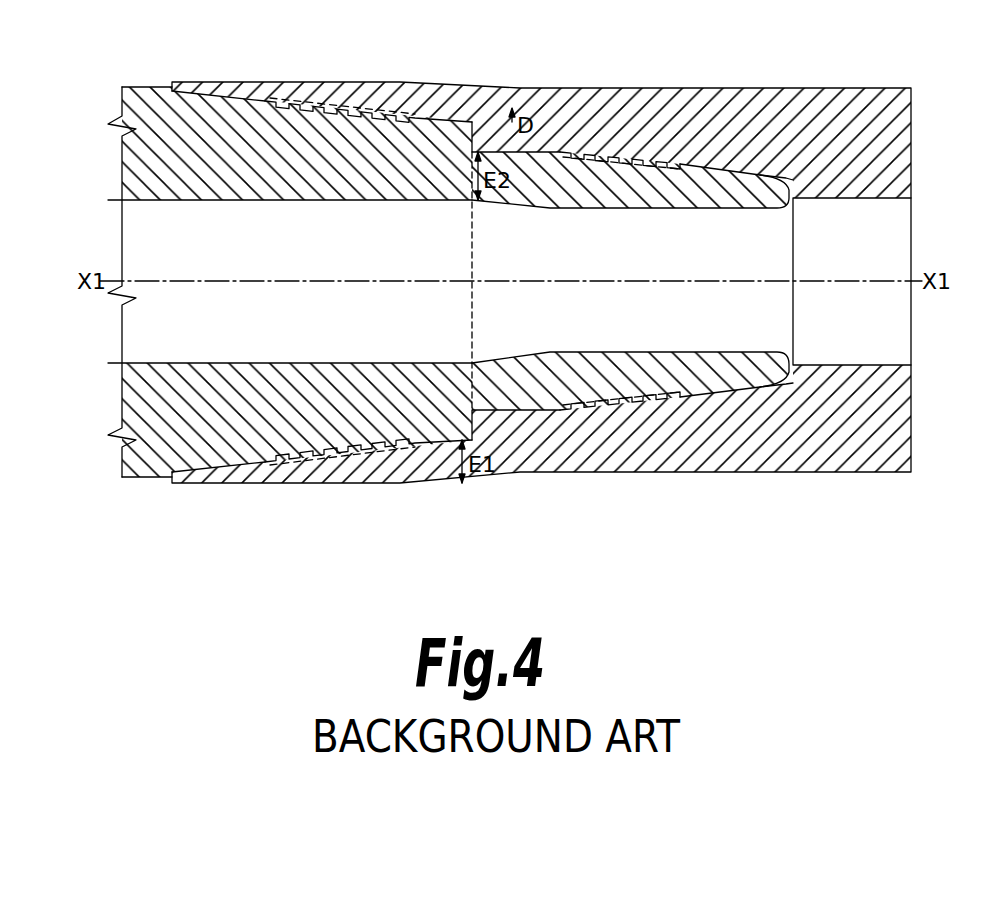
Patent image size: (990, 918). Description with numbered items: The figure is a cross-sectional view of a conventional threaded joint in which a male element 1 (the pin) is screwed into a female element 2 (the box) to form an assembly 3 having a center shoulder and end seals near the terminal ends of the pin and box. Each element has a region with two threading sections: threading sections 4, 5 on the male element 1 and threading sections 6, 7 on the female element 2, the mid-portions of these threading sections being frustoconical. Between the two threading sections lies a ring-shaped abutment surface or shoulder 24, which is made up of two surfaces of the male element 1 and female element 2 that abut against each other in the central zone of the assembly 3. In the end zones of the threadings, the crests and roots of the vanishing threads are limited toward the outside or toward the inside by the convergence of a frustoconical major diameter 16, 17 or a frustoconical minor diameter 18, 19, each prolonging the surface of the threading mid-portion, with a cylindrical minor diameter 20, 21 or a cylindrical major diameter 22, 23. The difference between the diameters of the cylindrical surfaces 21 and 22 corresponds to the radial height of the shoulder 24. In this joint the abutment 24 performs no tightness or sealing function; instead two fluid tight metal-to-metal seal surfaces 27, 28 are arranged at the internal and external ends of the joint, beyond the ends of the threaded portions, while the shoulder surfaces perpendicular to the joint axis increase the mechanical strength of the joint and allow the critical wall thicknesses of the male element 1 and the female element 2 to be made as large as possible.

The male element 1 is at (344, 430).
The female element 2 is at (752, 458).
The assembly 3 is at (493, 505).
The threading section 4 is at (652, 168).
The threading section 5 is at (327, 120).
The threading section 6 is at (637, 150).
The threading section 7 is at (344, 99).
The frustoconical major diameter 16 is at (676, 212).
The frustoconical major diameter 17 is at (379, 107).
The frustoconical minor diameter 18 is at (612, 163).
The frustoconical minor diameter 19 is at (290, 113).
The cylindrical minor diameter 20 is at (679, 176).
The cylindrical minor diameter 21 is at (414, 123).
The cylindrical major diameter 22 is at (578, 150).
The cylindrical major diameter 23 is at (283, 100).
The ring-shaped abutment surface or shoulder 24 is at (467, 137).
The metal-to-metal seal surface 27 is at (762, 176).
The metal-to-metal seal surface 28 is at (173, 92).